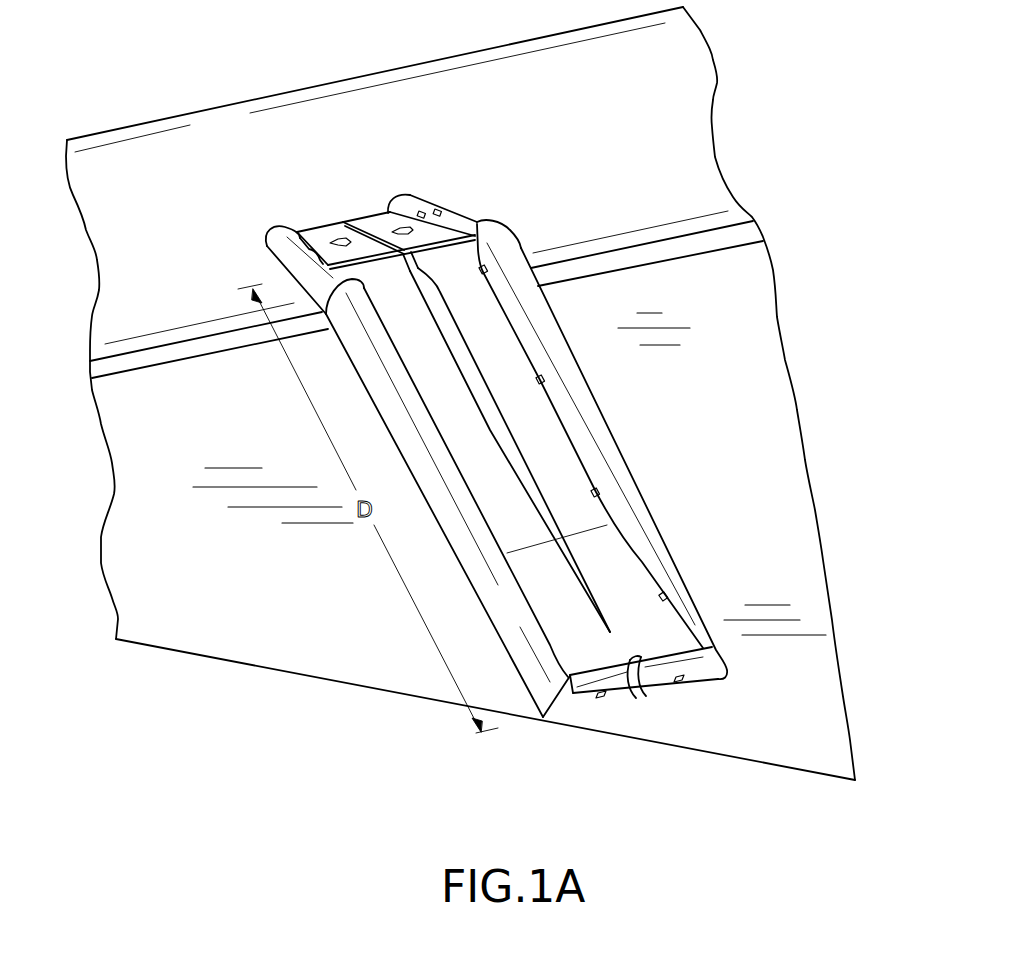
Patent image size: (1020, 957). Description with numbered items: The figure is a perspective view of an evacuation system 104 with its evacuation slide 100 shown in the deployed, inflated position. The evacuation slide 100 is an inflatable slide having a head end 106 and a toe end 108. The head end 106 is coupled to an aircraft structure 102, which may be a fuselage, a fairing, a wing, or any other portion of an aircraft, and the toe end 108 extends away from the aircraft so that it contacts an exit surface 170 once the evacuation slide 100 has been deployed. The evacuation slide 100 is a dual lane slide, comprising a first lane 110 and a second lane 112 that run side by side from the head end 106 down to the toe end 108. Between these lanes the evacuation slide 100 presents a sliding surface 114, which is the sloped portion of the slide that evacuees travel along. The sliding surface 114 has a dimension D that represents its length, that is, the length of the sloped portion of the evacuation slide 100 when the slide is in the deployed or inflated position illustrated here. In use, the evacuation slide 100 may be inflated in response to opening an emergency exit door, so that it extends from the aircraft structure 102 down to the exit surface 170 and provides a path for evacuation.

The evacuation slide 100 is at (528, 444).
The aircraft structure 102 is at (566, 137).
The evacuation system 104 is at (676, 290).
The head end 106 is at (324, 205).
The toe end 108 is at (650, 710).
The first lane 110 is at (583, 638).
The second lane 112 is at (647, 617).
The sliding surface 114 is at (472, 462).
The exit surface 170 is at (292, 672).